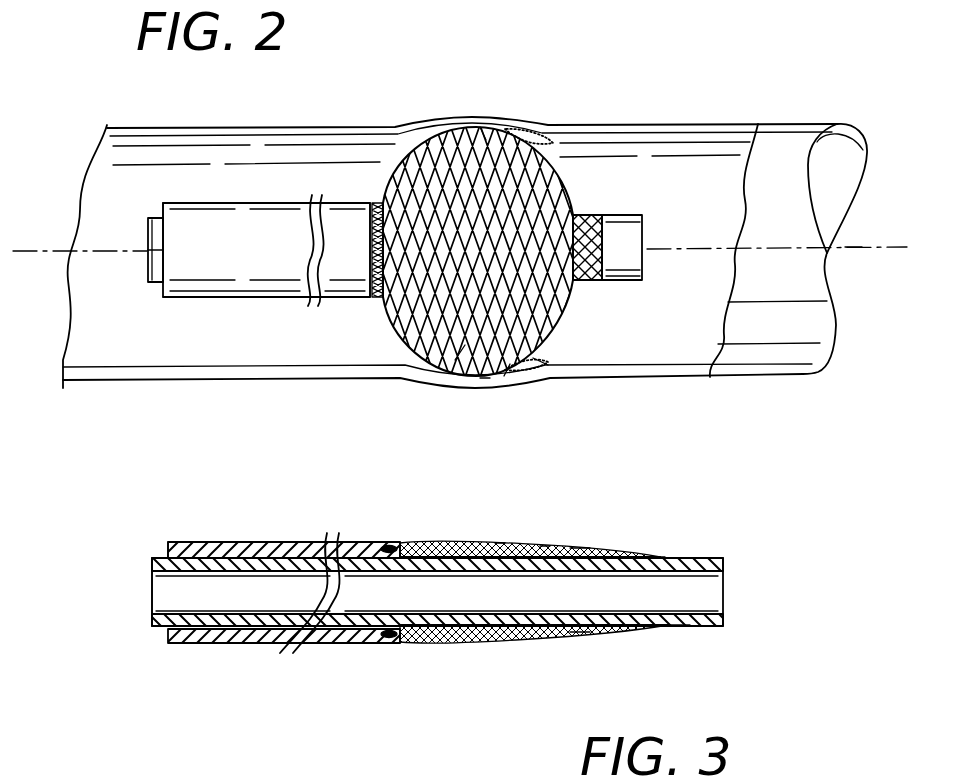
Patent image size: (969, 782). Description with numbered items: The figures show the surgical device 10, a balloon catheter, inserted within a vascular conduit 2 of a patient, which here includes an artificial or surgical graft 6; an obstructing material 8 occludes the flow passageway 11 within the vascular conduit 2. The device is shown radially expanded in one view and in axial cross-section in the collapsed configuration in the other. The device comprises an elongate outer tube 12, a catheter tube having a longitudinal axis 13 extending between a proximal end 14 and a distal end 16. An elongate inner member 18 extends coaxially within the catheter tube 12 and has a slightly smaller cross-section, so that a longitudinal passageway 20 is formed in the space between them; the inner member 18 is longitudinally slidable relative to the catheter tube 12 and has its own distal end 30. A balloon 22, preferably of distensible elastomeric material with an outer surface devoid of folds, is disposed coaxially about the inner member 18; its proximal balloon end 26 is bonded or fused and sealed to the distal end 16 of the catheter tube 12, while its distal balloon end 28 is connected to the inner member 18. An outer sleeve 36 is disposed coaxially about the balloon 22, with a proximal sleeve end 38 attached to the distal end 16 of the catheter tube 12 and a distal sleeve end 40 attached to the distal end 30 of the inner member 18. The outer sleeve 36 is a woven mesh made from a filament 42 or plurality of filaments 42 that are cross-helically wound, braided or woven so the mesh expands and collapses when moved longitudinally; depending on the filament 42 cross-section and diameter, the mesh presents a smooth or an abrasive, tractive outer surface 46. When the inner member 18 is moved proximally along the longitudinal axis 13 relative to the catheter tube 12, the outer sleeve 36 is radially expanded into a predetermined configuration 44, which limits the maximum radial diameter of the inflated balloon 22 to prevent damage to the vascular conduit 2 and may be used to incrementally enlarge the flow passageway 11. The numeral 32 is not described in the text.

In FIG. 2, the vascular conduit 2 is at (657, 375).
In FIG. 2, the artificial or surgical graft 6 is at (673, 122).
In FIG. 2, the obstructing material 8 is at (523, 367).
In FIG. 2, the surgical device 10 is at (436, 92).
In FIG. 3, the surgical device 10 is at (292, 522).
In FIG. 2, the flow passageway 11 is at (845, 167).
In FIG. 2, the outer tube 12 is at (232, 300).
In FIG. 3, the outer tube 12 is at (202, 645).
In FIG. 2, the longitudinal axis 13 is at (852, 249).
In FIG. 2, the proximal end 14 is at (165, 300).
In FIG. 3, the proximal end 14 is at (168, 640).
In FIG. 2, the distal end 16 is at (370, 300).
In FIG. 3, the distal end 16 is at (396, 630).
In FIG. 2, the inner member 18 is at (150, 268).
In FIG. 3, the inner member 18 is at (150, 622).
In FIG. 2, the longitudinal passageway 20 is at (160, 207).
In FIG. 3, the longitudinal passageway 20 is at (165, 548).
In FIG. 2, the balloon 22 is at (548, 313).
In FIG. 3, the balloon 22 is at (512, 637).
In FIG. 3, the proximal balloon end 26 is at (405, 642).
In FIG. 3, the distal balloon end 28 is at (595, 672).
In FIG. 2, the distal end of the inner member 30 is at (628, 284).
In FIG. 3, the distal end of the inner member 30 is at (665, 622).
In FIG. 2, the guidewire lumen 32 is at (147, 250).
In FIG. 3, the guidewire lumen 32 is at (726, 588).
In FIG. 2, the outer sleeve 36 is at (457, 362).
In FIG. 3, the outer sleeve 36 is at (500, 543).
In FIG. 2, the proximal sleeve end 38 is at (378, 200).
In FIG. 3, the proximal sleeve end 38 is at (385, 630).
In FIG. 2, the distal sleeve end 40 is at (580, 214).
In FIG. 3, the distal sleeve end 40 is at (655, 556).
In FIG. 2, the filament 42 is at (505, 380).
In FIG. 3, the filament 42 is at (545, 547).
In FIG. 2, the predetermined configuration 44 is at (535, 360).
In FIG. 2, the outer surface 46 is at (485, 382).